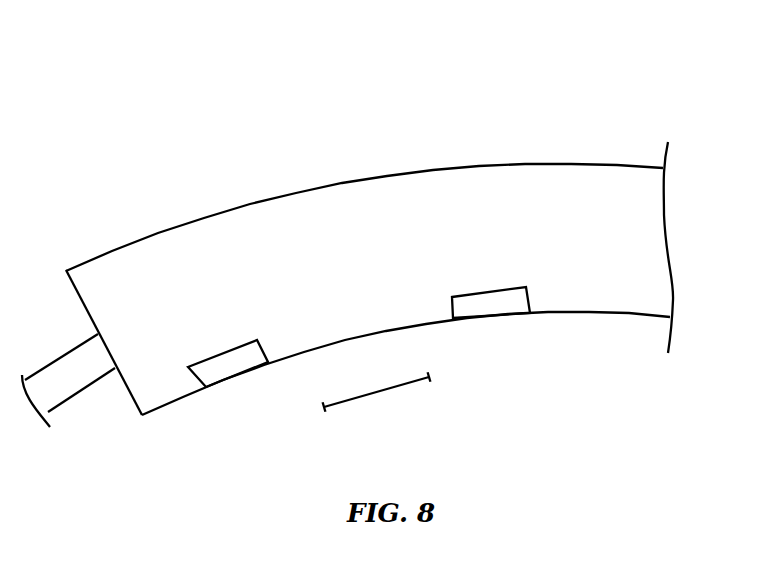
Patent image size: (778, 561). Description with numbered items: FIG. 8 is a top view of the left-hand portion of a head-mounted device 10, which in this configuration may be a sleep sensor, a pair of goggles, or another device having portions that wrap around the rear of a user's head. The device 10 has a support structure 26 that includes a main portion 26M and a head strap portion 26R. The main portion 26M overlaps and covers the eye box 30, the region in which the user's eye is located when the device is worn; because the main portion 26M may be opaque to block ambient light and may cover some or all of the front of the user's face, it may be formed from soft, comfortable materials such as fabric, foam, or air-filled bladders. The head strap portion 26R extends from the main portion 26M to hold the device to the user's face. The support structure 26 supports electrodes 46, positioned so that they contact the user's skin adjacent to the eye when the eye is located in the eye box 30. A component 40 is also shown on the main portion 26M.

The device 10 is at (663, 71).
The support structure 26 is at (698, 142).
The main portion 26M is at (162, 233).
The head strap portion 26R is at (88, 388).
The eye box 30 is at (432, 378).
The component 40 is at (238, 358).
The electrodes 46 is at (493, 303).